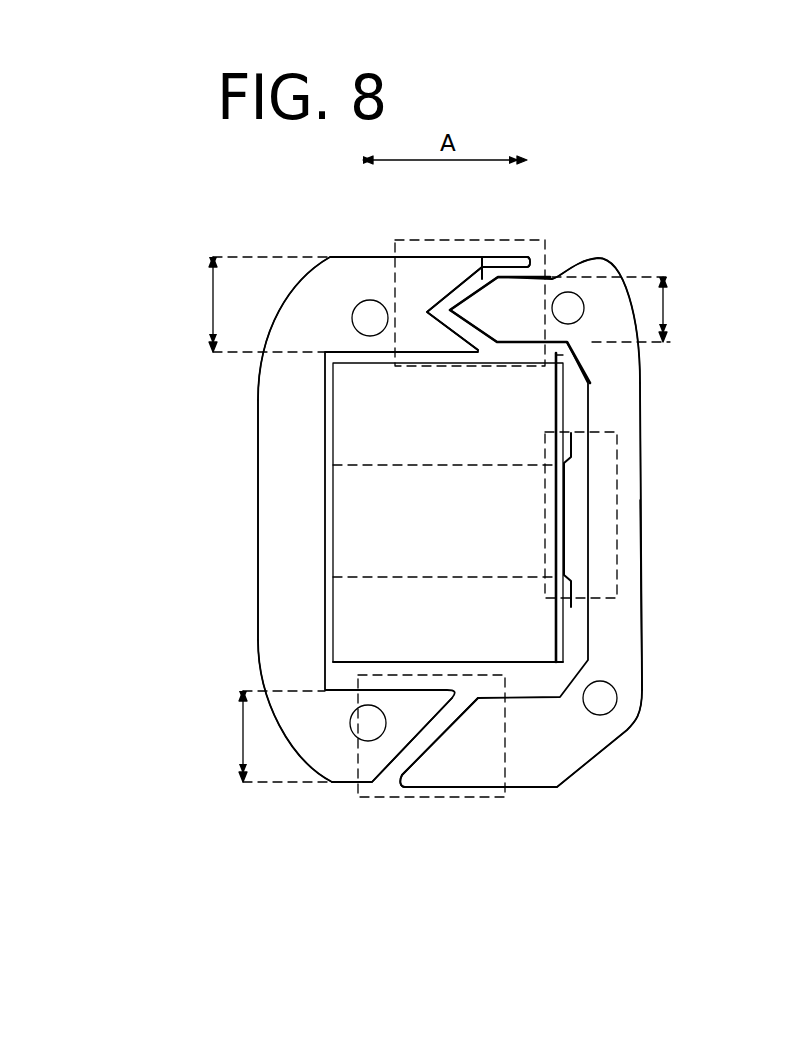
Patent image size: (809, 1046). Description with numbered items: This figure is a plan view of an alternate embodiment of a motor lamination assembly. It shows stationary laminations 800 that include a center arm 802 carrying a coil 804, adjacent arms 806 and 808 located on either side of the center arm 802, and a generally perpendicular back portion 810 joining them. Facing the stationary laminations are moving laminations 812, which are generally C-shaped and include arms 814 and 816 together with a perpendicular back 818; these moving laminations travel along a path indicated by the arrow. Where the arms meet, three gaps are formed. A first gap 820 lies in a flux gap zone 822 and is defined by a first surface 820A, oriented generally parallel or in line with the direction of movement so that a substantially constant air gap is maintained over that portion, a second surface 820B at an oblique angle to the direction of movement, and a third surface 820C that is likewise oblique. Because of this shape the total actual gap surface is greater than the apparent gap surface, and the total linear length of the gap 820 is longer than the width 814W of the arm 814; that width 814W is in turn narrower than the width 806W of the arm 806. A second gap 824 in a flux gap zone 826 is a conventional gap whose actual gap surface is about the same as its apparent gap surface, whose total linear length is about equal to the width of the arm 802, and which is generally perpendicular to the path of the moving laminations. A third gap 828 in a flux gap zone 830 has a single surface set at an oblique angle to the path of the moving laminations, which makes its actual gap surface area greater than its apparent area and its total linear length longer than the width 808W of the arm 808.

The stationary laminations 800 is at (259, 611).
The center arm 802 is at (385, 511).
The coil 804 is at (353, 603).
The arm 806 is at (358, 277).
The width of arm 806 806W is at (213, 305).
The arm 808 is at (345, 768).
The width of arm 808 808W is at (243, 730).
The back portion 810 is at (280, 433).
The moving laminations 812 is at (645, 652).
The arm 814 is at (560, 287).
The width of arm 814 814W is at (665, 305).
The arm 816 is at (525, 775).
The back 818 is at (630, 613).
The first gap 820 is at (482, 268).
The first surface 820A is at (518, 258).
The second surface 820B is at (448, 290).
The third surface 820C is at (464, 348).
The flux gap zone 822 is at (400, 240).
The second gap 824 is at (578, 472).
The flux gap zone 826 is at (618, 522).
The third gap 828 is at (413, 753).
The flux gap zone 830 is at (370, 797).